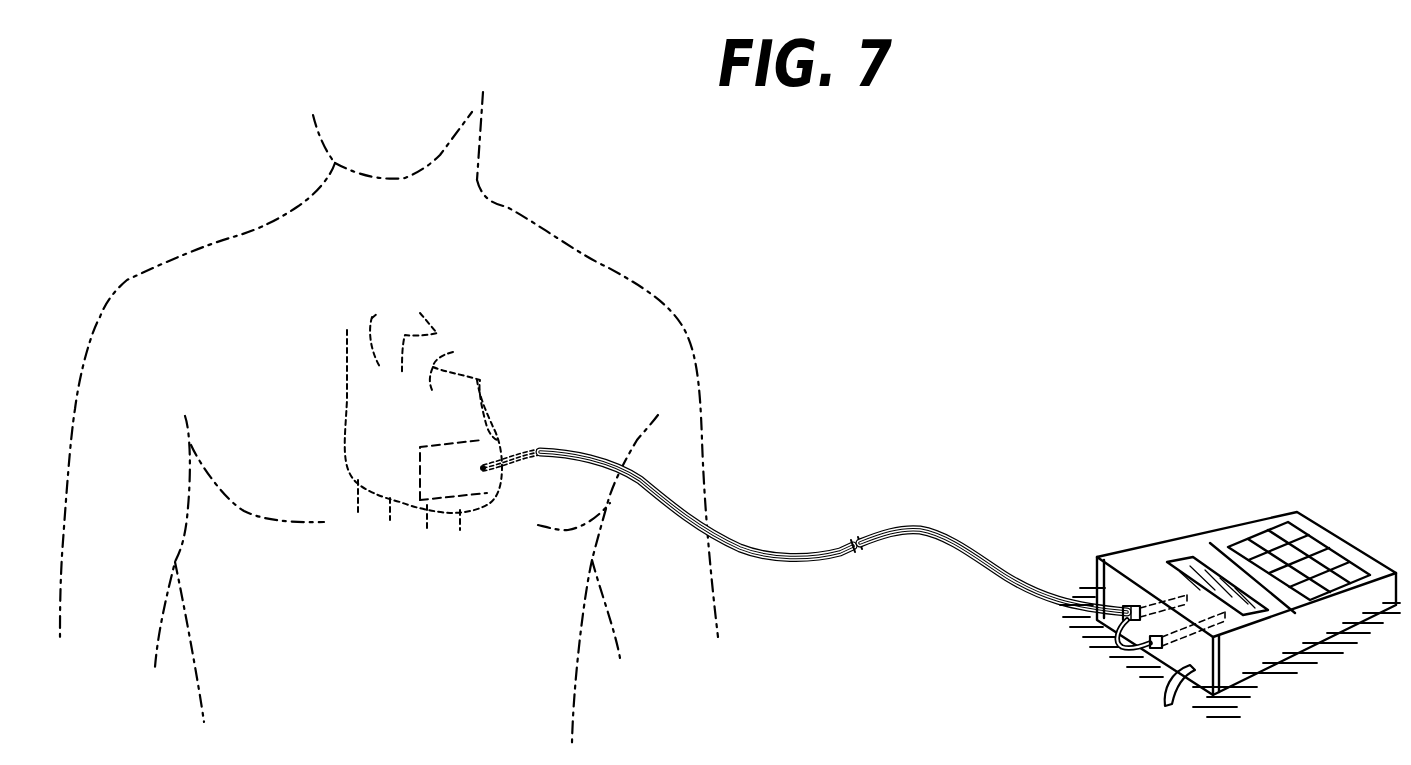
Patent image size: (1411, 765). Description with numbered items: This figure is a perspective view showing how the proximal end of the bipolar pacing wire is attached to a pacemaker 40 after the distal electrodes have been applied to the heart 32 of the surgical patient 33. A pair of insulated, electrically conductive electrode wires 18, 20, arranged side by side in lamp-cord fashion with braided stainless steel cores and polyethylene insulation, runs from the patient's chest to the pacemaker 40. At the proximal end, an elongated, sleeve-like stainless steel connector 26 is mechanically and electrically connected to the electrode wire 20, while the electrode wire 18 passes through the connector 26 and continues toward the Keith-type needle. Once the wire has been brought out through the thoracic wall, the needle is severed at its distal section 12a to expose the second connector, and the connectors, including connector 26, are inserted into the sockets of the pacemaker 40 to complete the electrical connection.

The surgical patient 33 is at (543, 250).
The heart 32 is at (362, 432).
The electrode wire 18 is at (987, 547).
The electrode wire 20 is at (987, 567).
The connector 26 is at (1128, 606).
The pacemaker 40 is at (1213, 540).
The distal section 12a is at (1153, 648).